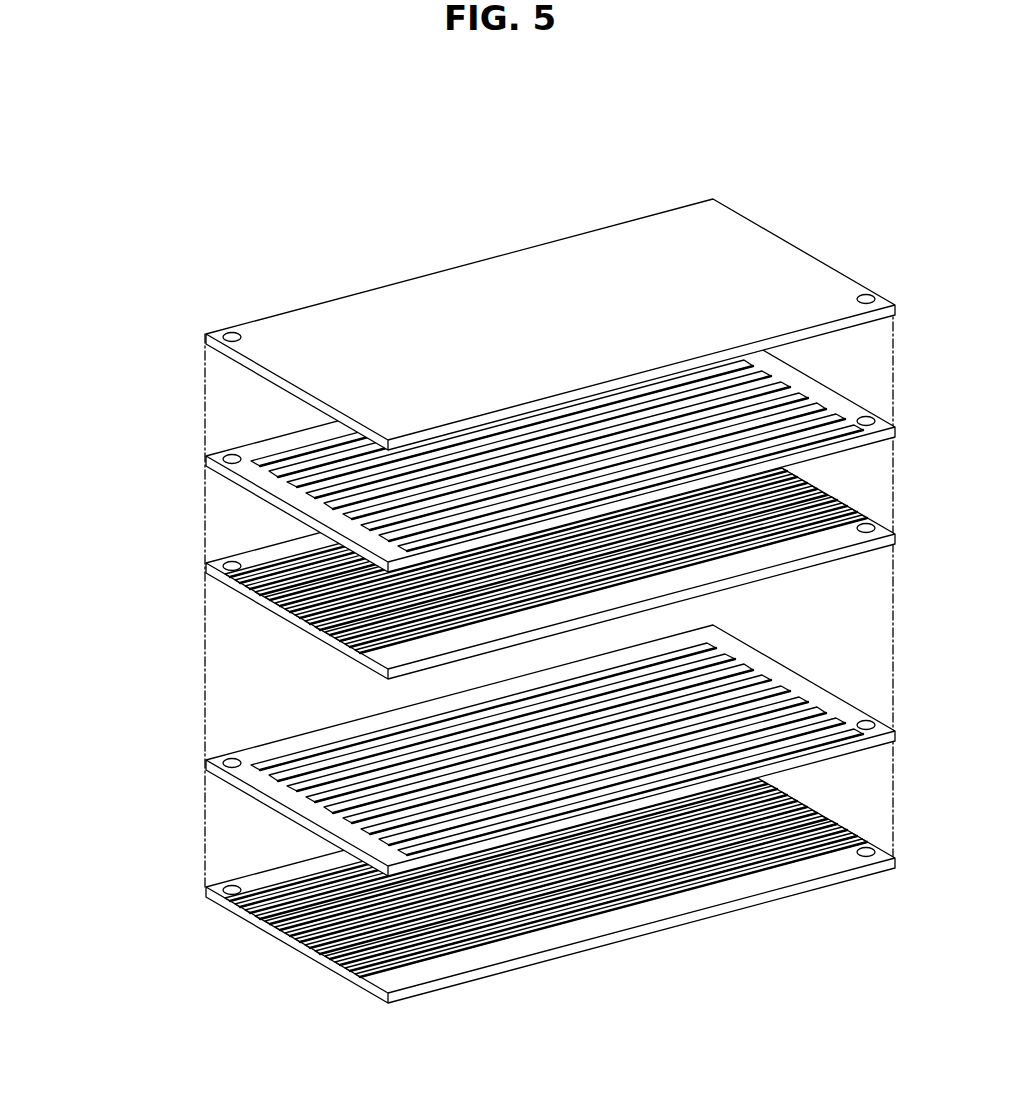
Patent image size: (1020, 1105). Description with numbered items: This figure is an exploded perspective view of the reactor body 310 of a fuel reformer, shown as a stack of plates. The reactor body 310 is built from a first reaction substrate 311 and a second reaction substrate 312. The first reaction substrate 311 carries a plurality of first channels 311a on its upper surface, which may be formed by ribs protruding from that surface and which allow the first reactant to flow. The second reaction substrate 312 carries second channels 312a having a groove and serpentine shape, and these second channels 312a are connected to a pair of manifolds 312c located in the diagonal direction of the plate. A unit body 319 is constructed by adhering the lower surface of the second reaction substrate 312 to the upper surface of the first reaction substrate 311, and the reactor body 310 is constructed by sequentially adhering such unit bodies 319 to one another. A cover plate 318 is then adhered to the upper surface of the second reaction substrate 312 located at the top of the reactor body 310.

The reactor body 310 is at (518, 116).
The cover plate 318 is at (307, 312).
The unit body 319 is at (127, 765).
The second reaction substrate 312 is at (509, 750).
The second channel 312a is at (297, 745).
The manifold 312c is at (232, 757).
The first reaction substrate 311 is at (509, 877).
The first channel 311a is at (204, 889).